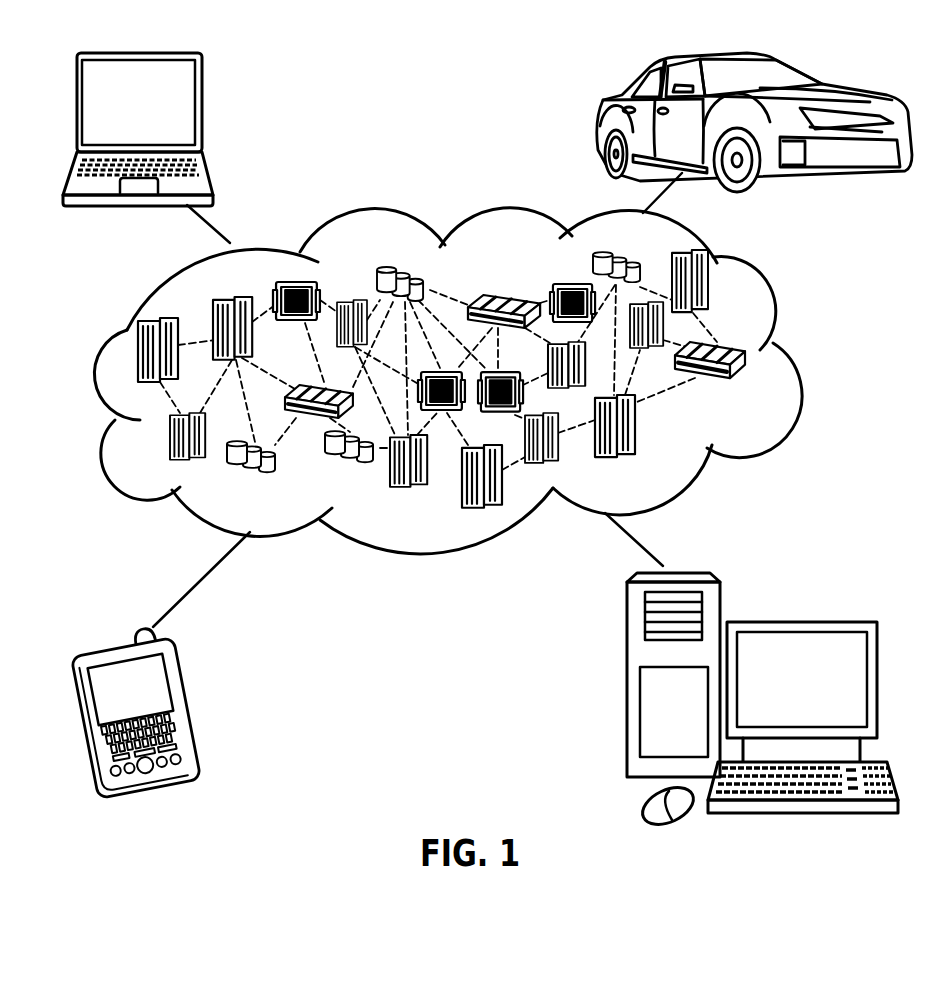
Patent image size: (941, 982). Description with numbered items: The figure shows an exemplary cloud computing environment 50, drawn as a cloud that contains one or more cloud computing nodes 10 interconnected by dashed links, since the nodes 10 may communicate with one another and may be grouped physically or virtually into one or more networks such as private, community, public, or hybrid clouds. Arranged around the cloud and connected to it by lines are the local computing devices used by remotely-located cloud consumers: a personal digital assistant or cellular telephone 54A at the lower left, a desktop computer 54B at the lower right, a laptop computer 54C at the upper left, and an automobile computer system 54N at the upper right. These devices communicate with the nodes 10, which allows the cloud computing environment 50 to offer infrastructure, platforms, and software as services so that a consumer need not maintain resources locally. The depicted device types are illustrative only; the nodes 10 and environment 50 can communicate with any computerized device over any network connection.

The cloud computing node 10 is at (752, 389).
The cloud computing environment 50 is at (803, 360).
The personal digital assistant (PDA) or cellular telephone 54A is at (192, 707).
The desktop computer 54B is at (799, 622).
The laptop computer 54C is at (202, 110).
The automobile computer system 54N is at (600, 122).